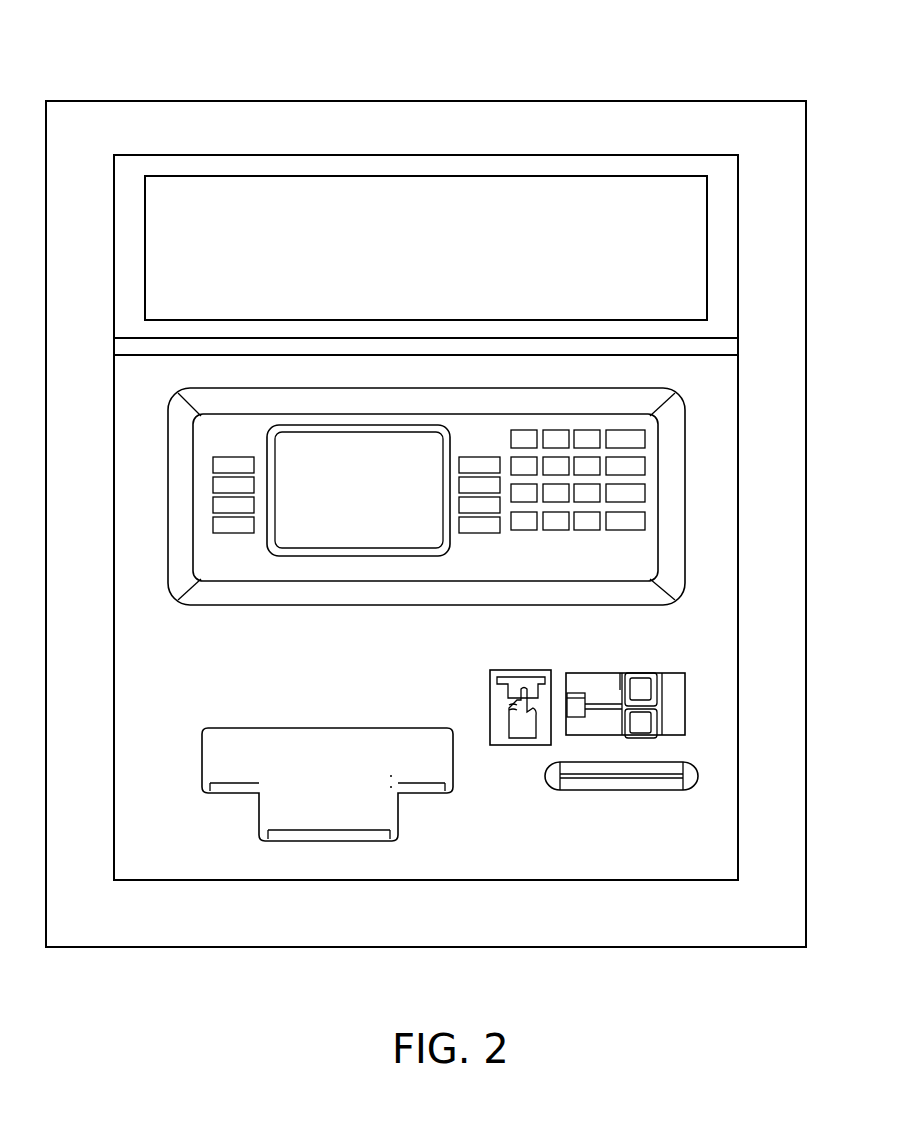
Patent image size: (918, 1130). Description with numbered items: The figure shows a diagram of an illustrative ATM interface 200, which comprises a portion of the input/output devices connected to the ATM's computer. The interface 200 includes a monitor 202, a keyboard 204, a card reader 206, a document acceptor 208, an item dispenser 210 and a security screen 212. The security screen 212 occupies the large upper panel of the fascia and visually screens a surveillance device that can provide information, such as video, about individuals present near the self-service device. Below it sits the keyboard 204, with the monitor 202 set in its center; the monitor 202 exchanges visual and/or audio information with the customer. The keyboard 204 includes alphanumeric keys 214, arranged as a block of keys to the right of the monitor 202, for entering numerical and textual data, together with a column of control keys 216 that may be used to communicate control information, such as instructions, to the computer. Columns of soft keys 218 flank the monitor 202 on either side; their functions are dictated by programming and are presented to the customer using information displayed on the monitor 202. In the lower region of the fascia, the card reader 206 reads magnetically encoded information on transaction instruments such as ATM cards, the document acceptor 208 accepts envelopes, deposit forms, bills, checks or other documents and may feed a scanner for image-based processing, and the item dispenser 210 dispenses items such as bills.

The ATM interface 200 is at (105, 68).
The monitor 202 is at (380, 430).
The keyboard 204 is at (474, 570).
The card reader 206 is at (672, 673).
The document acceptor 208 is at (680, 762).
The item dispenser 210 is at (242, 727).
The security screen 212 is at (648, 176).
The alphanumeric keys 214 is at (525, 528).
The control keys 216 is at (625, 428).
The soft keys 218 is at (232, 456).